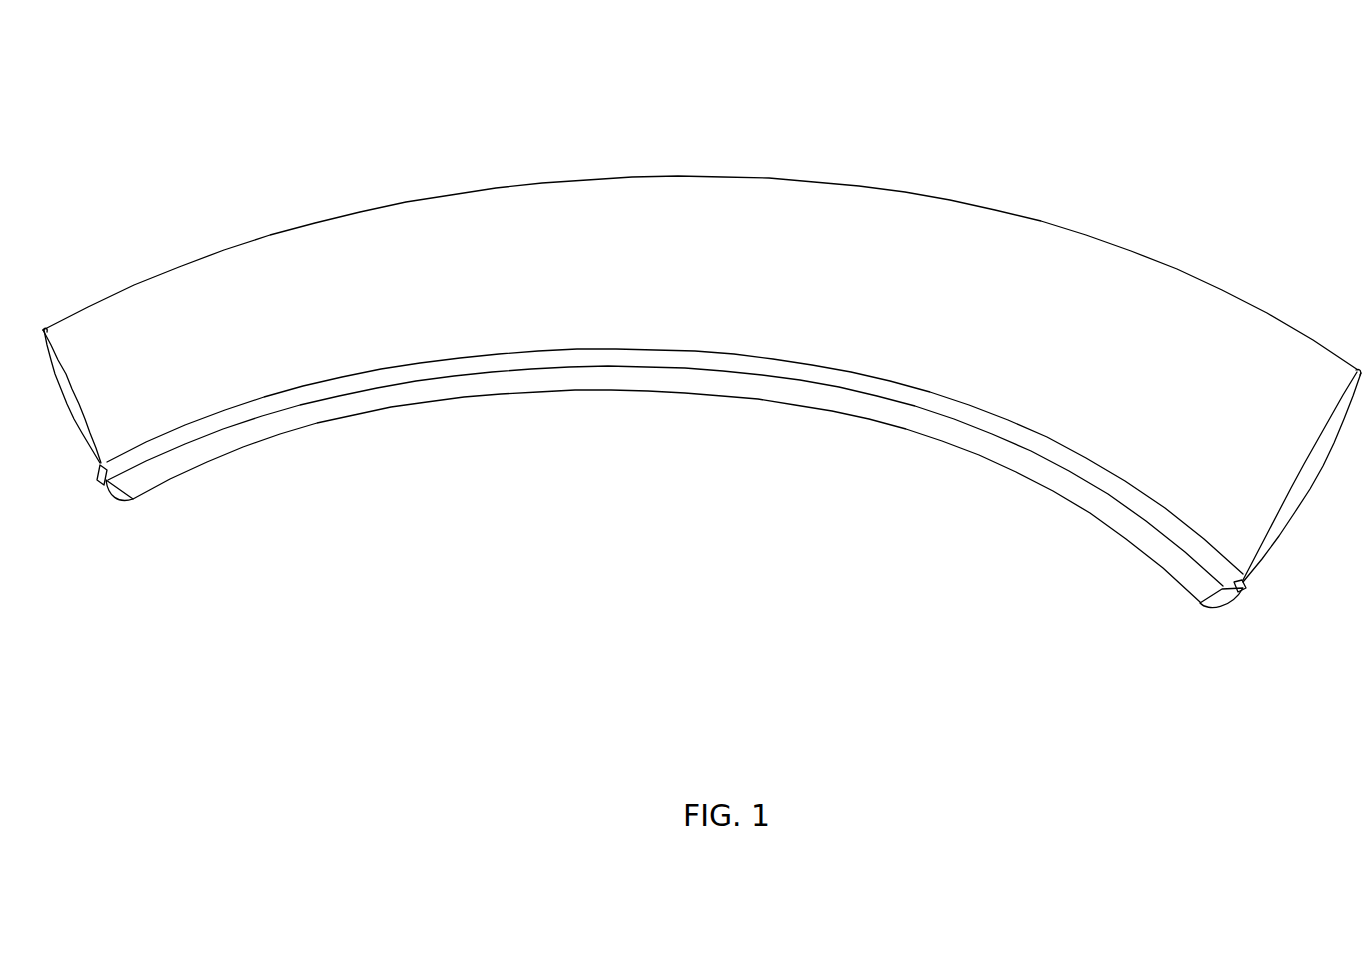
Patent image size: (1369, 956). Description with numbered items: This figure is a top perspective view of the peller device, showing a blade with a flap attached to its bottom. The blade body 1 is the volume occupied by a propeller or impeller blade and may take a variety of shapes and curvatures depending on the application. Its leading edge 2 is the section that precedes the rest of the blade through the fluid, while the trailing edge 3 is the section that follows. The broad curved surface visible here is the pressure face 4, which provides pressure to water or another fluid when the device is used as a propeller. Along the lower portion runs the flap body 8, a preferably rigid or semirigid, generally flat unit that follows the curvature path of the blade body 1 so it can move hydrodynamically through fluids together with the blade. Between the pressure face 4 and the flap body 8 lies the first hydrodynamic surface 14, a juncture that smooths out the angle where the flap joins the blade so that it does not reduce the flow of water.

The blade body 1 is at (294, 78).
The leading edge 2 is at (693, 178).
The trailing edge 3 is at (636, 349).
The pressure face 4 is at (1082, 353).
The flap body 8 is at (737, 388).
The first hydrodynamic surface 14 is at (290, 400).